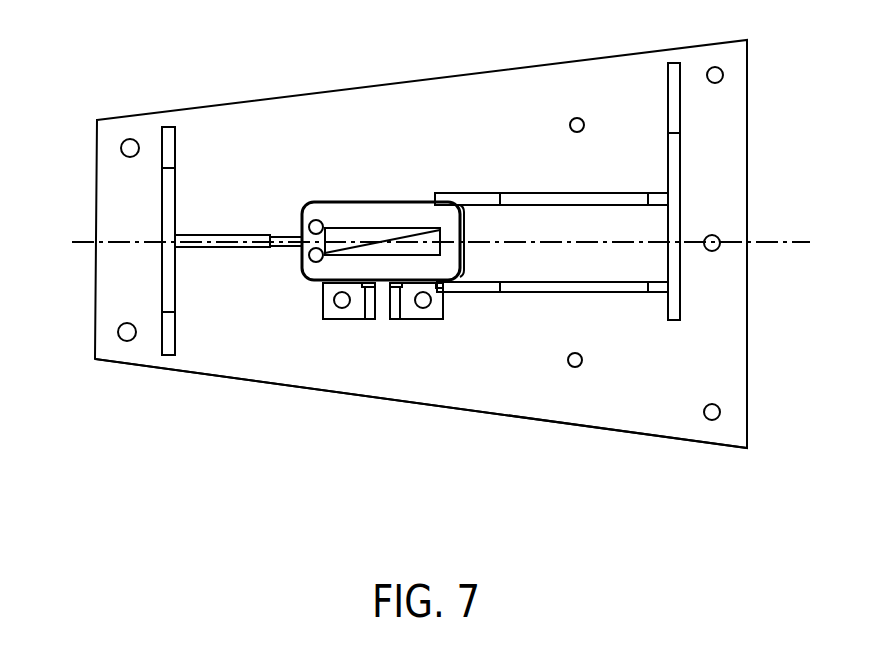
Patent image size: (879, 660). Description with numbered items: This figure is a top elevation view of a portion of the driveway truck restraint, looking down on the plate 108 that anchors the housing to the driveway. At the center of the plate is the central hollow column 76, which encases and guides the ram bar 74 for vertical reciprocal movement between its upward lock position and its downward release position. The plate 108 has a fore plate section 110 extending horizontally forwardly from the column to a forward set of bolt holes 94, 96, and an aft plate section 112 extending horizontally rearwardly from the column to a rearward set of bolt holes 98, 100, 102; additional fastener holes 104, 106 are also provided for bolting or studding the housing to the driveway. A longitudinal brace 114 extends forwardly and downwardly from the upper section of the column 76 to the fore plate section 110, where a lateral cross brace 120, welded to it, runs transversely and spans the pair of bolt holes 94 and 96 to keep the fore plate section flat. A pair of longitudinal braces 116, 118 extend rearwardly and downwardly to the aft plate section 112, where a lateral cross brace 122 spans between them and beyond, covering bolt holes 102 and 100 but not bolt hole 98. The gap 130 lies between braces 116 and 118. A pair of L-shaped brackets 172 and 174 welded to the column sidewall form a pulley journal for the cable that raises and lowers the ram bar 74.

The ram bar 74 is at (380, 233).
The central hollow column 76 is at (350, 202).
The bolt hole 94 is at (130, 139).
The bolt hole 96 is at (121, 326).
The bolt hole 98 is at (716, 405).
The bolt hole 100 is at (718, 237).
The bolt hole 102 is at (723, 75).
The bolt hole 104 is at (572, 118).
The bolt hole 106 is at (575, 367).
The plate 108 is at (437, 407).
The fore plate section 110 is at (220, 358).
The aft plate section 112 is at (720, 327).
The longitudinal brace 114 is at (235, 235).
The longitudinal brace 116 is at (548, 292).
The longitudinal brace 118 is at (530, 193).
The lateral cross brace 120 is at (165, 218).
The lateral cross brace 122 is at (675, 165).
The gap 130 is at (587, 237).
The L-shaped bracket 172 is at (352, 319).
The L-shaped bracket 174 is at (413, 319).